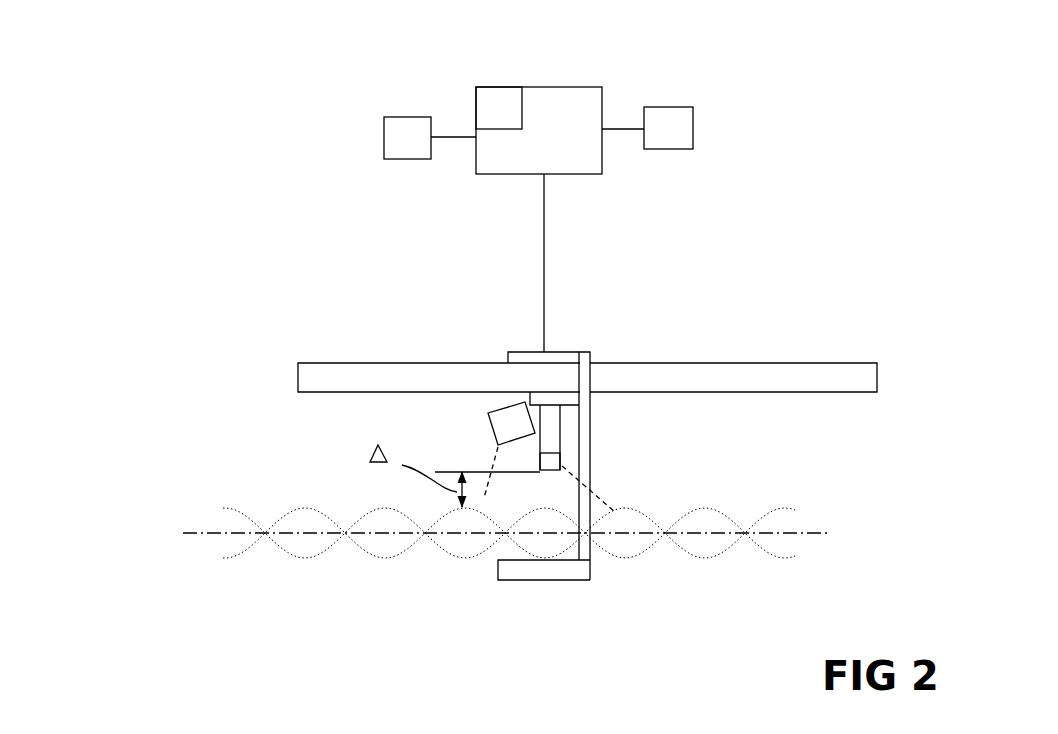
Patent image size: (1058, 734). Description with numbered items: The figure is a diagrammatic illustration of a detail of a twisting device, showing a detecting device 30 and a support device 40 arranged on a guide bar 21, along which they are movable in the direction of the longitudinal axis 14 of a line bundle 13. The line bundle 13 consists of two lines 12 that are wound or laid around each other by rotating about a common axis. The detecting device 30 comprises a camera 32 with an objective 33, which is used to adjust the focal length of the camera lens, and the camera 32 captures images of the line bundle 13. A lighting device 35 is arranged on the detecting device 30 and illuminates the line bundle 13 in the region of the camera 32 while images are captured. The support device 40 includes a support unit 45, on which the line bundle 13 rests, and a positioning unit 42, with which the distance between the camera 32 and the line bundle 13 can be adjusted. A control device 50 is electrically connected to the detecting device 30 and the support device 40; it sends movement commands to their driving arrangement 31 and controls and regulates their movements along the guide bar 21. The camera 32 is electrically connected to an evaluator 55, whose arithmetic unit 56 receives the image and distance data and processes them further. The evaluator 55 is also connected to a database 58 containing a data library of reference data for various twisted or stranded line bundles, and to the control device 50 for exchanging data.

The lines 12 is at (673, 540).
The line bundle 13 is at (476, 514).
The longitudinal axis 14 is at (832, 535).
The guide bar 21 is at (830, 382).
The detecting device 30 is at (465, 439).
The driving arrangement 31 is at (572, 355).
The camera 32 is at (550, 417).
The objective 33 is at (543, 467).
The lighting device 35 is at (489, 422).
The support device 40 is at (624, 469).
The positioning unit 42 is at (600, 456).
The support unit 45 is at (525, 572).
The control device 50 is at (675, 118).
The evaluator 55 is at (565, 100).
The arithmetic unit 56 is at (489, 98).
The database 58 is at (386, 135).